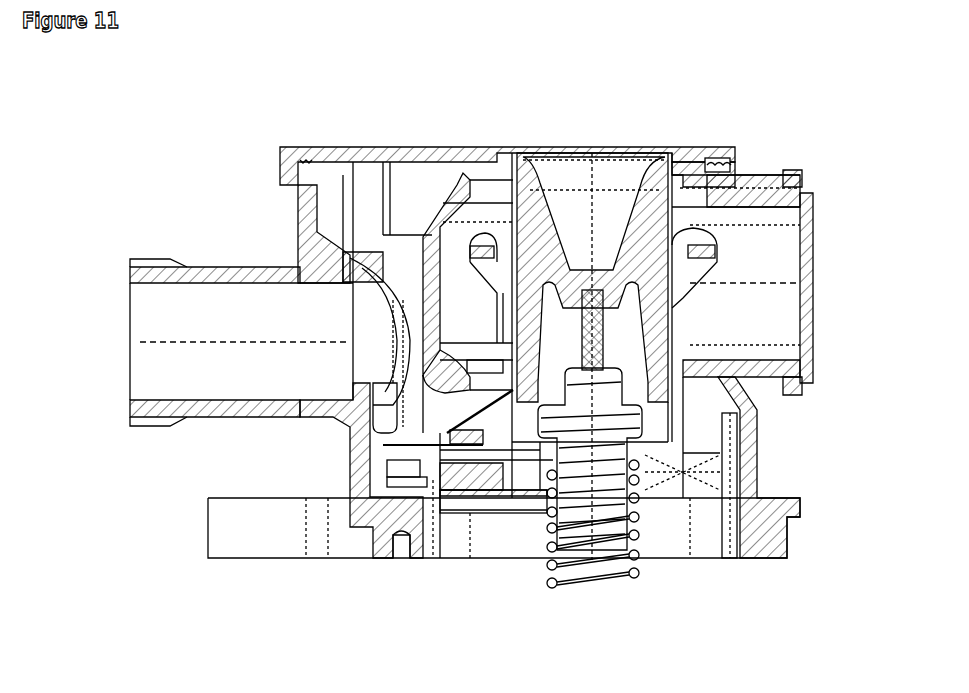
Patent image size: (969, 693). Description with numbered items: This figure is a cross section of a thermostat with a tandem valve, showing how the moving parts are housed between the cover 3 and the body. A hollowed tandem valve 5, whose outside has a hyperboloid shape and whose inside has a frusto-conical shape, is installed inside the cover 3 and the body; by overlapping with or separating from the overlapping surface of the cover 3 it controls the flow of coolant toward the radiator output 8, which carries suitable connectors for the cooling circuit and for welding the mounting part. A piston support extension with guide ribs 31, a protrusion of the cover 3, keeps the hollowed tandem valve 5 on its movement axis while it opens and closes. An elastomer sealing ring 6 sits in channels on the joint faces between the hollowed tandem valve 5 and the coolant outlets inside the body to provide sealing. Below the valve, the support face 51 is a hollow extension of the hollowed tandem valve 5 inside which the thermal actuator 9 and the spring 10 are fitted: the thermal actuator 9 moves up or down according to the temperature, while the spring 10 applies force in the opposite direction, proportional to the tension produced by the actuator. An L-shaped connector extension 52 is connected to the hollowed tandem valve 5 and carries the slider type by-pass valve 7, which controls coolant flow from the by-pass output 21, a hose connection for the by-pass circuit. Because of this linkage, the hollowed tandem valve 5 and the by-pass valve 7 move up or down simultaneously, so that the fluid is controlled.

The cover 3 is at (340, 152).
The by-pass output 21 is at (473, 200).
The piston support extension with guide ribs 31 is at (523, 197).
The elastomer sealing ring 6 is at (703, 252).
The hollowed tandem valve 5 is at (677, 303).
The radiator output 8 is at (811, 280).
The by-pass valve 7 is at (388, 463).
The connector extension 52 is at (388, 482).
The thermal actuator 9 is at (568, 490).
The spring 10 is at (637, 570).
The support face 51 is at (635, 453).